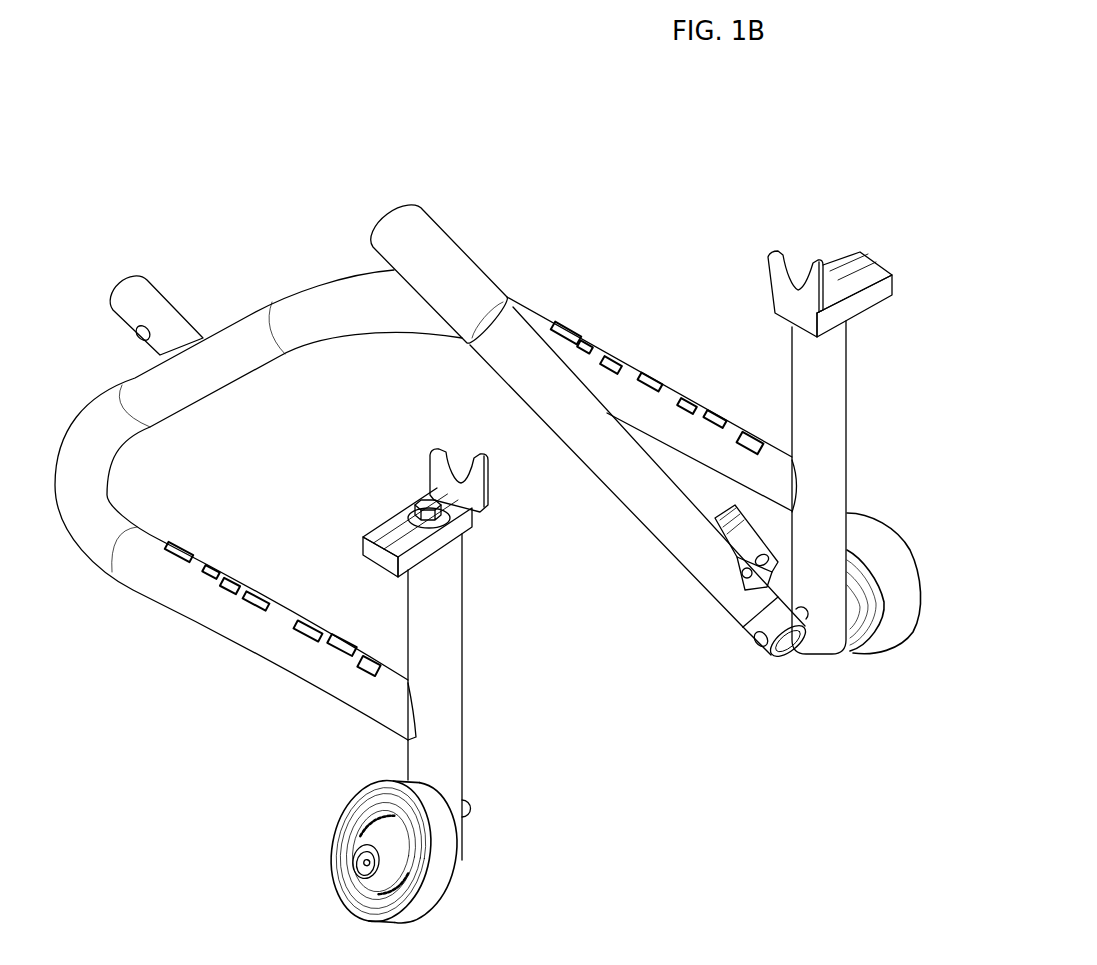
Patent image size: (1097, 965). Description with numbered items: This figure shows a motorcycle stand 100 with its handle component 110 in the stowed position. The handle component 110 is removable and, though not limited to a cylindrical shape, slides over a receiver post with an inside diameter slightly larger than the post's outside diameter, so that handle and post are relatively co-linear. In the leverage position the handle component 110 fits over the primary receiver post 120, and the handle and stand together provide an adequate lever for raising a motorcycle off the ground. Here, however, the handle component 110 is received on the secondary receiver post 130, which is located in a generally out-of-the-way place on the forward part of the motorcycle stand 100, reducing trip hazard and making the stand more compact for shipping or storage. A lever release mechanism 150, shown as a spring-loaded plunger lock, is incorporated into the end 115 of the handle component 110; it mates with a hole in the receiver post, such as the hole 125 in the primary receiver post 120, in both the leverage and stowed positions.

The motorcycle stand 100 is at (248, 197).
The handle component 110 is at (410, 242).
The end of the handle 115 is at (733, 597).
The primary receiver post 120 is at (147, 297).
The hole in the primary receiver post 125 is at (135, 332).
The secondary receiver post 130 is at (772, 653).
The lever release mechanism 150 is at (699, 540).